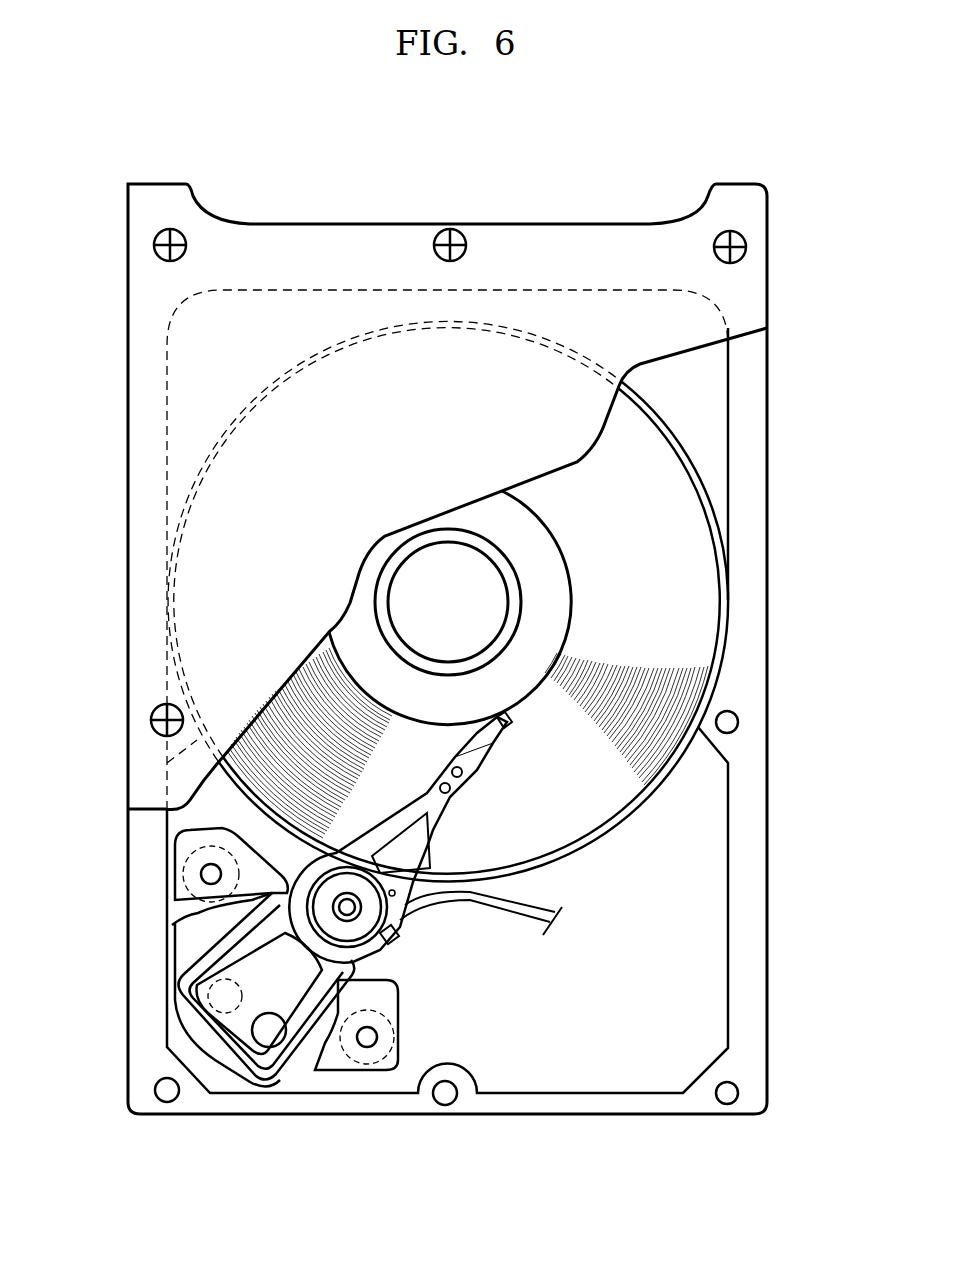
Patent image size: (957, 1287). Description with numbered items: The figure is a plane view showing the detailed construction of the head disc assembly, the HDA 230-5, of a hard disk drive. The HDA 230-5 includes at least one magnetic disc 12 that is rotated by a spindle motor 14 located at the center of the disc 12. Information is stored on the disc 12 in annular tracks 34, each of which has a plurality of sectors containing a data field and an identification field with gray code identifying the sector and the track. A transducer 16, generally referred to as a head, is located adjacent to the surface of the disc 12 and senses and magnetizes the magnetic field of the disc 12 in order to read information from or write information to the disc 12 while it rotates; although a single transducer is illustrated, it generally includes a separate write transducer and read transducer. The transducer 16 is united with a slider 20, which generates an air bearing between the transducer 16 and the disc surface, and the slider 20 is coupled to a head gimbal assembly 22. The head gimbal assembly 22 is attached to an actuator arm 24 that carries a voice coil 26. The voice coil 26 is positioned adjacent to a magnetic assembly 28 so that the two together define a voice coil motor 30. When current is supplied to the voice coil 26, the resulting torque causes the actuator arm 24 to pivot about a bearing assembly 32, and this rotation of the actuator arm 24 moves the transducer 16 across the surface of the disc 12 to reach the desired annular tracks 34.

The HDA 230-5 is at (700, 162).
The magnetic disc 12 is at (683, 541).
The spindle motor 14 is at (425, 578).
The annular tracks 34 is at (315, 712).
The slider 20 is at (425, 856).
The transducer 16 is at (505, 725).
The head gimbal assembly 22 is at (488, 757).
The bearing assembly 32 is at (358, 913).
The actuator arm 24 is at (265, 925).
The magnetic assembly 28 is at (208, 935).
The voice coil 26 is at (198, 988).
The voice coil motor 30 is at (318, 1052).